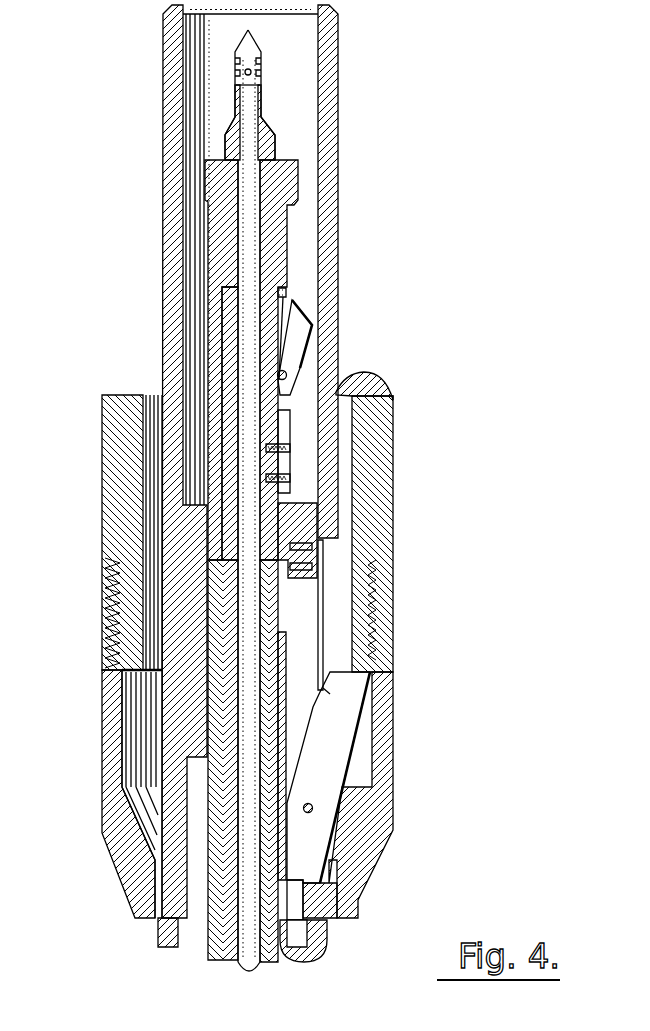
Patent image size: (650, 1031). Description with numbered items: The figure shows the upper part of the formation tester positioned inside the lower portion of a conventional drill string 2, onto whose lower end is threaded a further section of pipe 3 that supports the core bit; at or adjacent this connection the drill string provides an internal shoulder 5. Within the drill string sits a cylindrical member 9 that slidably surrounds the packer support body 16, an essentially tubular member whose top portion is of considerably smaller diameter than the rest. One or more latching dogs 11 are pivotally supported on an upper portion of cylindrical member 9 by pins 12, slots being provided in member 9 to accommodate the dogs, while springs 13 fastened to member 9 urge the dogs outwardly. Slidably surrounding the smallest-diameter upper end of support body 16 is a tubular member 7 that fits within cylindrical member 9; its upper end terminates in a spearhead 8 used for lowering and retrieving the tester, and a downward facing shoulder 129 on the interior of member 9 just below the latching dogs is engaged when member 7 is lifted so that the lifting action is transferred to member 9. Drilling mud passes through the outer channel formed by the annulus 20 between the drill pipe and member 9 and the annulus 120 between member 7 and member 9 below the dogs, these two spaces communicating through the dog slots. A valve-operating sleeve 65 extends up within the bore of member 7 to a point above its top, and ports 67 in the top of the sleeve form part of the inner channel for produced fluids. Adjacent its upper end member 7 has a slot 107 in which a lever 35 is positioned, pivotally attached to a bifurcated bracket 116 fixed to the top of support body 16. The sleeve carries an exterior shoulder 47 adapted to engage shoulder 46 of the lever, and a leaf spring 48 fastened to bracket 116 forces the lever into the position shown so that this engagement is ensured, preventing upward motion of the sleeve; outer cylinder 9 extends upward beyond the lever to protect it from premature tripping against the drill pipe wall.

The cylindrical member 9 is at (176, 106).
The annulus 20 is at (195, 455).
The exterior shoulder 47 is at (213, 415).
The valve-operating sleeve 65 is at (290, 1008).
The ports 67 is at (258, 90).
The spearhead 8 is at (282, 178).
The tubular member 7 is at (288, 250).
The slot 107 is at (283, 293).
The lever 35 is at (293, 328).
The shoulder 46 is at (270, 402).
The leaf spring 48 is at (333, 390).
The bifurcated bracket 116 is at (300, 430).
The drill string 2 is at (373, 487).
The springs 13 is at (322, 598).
The internal shoulder 5 is at (138, 677).
The latching dogs 11 is at (345, 723).
The pins 12 is at (313, 808).
The pipe 3 is at (370, 847).
The downward facing shoulder 129 is at (340, 932).
The annulus 120 is at (330, 937).
The packer support body 16 is at (223, 930).